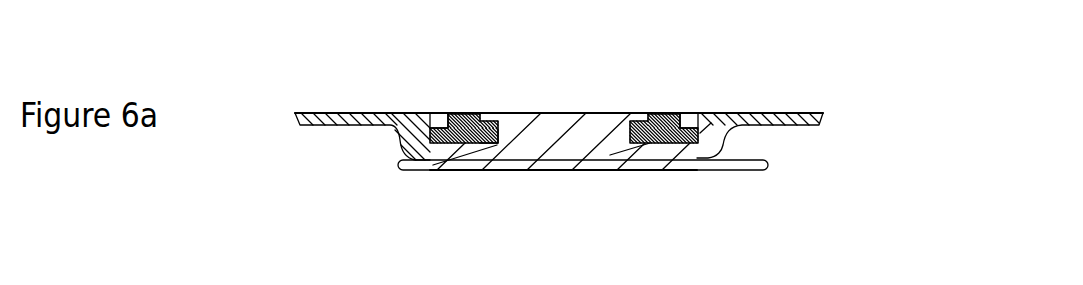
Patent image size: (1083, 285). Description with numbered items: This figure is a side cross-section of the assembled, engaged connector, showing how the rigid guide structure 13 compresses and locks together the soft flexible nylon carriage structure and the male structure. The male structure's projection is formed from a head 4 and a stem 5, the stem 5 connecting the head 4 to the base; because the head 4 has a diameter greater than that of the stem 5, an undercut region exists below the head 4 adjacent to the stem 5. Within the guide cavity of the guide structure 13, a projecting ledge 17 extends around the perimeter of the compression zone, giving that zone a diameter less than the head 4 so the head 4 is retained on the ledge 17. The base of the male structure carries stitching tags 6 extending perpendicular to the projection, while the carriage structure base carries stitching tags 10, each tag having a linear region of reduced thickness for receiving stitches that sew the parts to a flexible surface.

The stitching tags 10 is at (300, 127).
The head 4 is at (565, 123).
The stem 5 is at (547, 140).
The guide structure 13 is at (453, 113).
The projecting ledge 17 is at (495, 143).
The stitching tags 6 is at (757, 168).